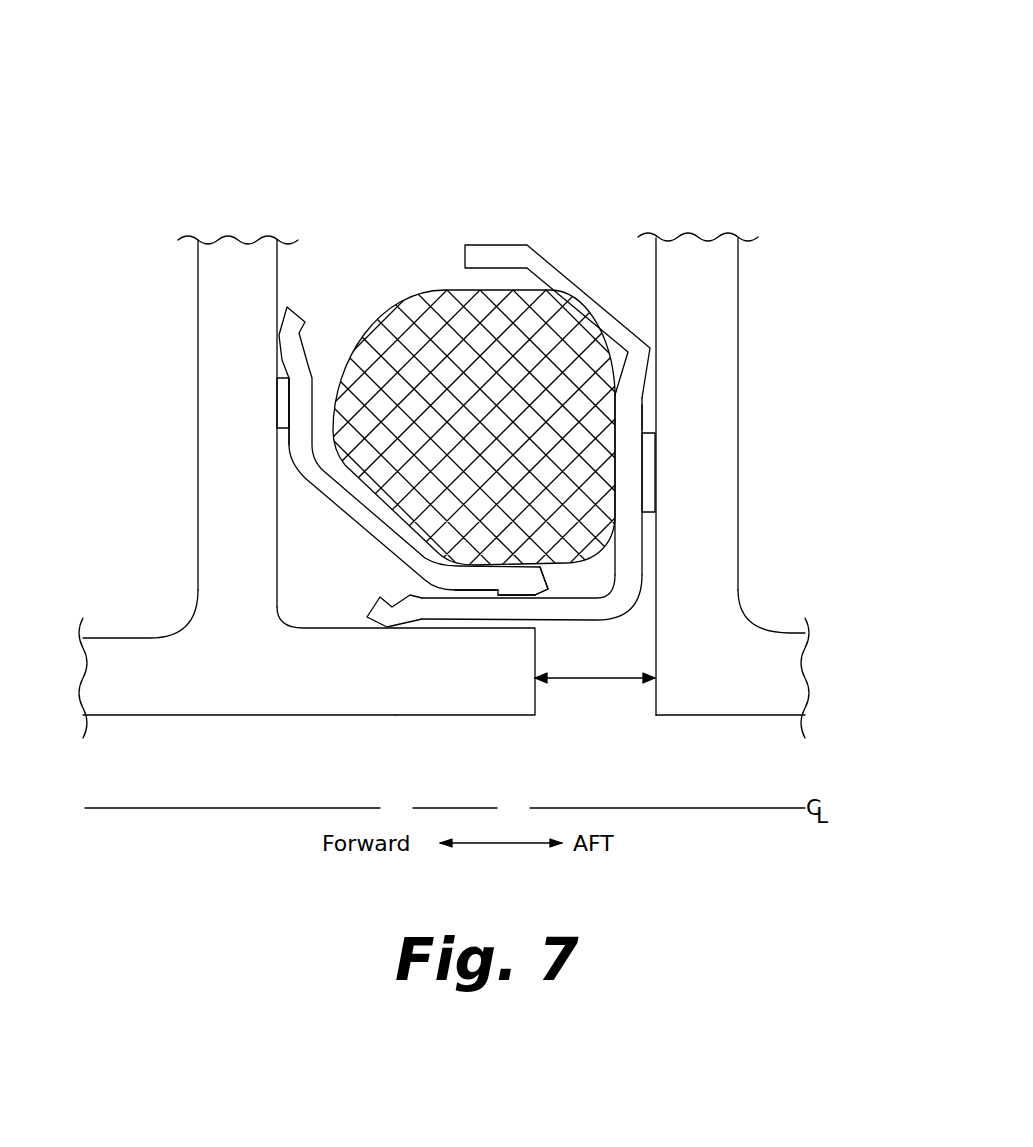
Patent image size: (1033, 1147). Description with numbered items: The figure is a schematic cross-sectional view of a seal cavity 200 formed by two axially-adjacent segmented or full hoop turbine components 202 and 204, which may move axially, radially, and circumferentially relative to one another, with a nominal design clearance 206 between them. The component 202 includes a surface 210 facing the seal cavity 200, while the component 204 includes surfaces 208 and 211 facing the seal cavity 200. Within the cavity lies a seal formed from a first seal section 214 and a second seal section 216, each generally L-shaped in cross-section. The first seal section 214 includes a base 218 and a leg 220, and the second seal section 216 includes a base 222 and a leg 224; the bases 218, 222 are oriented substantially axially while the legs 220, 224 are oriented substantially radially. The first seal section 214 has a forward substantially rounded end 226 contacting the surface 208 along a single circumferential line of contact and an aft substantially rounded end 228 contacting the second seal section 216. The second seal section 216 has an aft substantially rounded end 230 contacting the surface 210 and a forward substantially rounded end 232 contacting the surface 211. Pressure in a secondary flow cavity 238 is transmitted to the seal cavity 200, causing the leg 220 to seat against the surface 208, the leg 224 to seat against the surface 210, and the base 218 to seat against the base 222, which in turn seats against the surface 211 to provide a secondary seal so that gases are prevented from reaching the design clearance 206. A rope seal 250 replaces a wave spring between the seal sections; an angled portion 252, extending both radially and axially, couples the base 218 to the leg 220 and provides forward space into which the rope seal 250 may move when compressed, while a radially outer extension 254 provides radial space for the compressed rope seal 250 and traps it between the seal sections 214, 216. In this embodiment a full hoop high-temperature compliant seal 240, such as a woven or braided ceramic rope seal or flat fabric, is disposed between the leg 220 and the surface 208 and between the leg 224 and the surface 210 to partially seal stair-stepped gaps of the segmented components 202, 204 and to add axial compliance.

The seal cavity 200 is at (607, 107).
The turbine component 202 is at (735, 715).
The turbine component 204 is at (502, 715).
The nominal design clearance 206 is at (597, 680).
The surface 208 is at (278, 252).
The surface 210 is at (655, 260).
The surface 211 is at (317, 628).
The first seal section 214 is at (280, 438).
The second seal section 216 is at (653, 528).
The base 218 is at (457, 590).
The leg 220 is at (287, 372).
The base 222 is at (568, 597).
The leg 224 is at (641, 415).
The forward substantially rounded end 226 is at (277, 332).
The aft substantially rounded end 228 is at (523, 597).
The aft substantially rounded end 230 is at (657, 360).
The forward substantially rounded end 232 is at (397, 630).
The secondary flow cavity 238 is at (435, 49).
The compliant seal 240 is at (277, 400).
The rope seal 250 is at (398, 328).
The angled portion 252 is at (350, 533).
The radially outer extension 254 is at (567, 268).